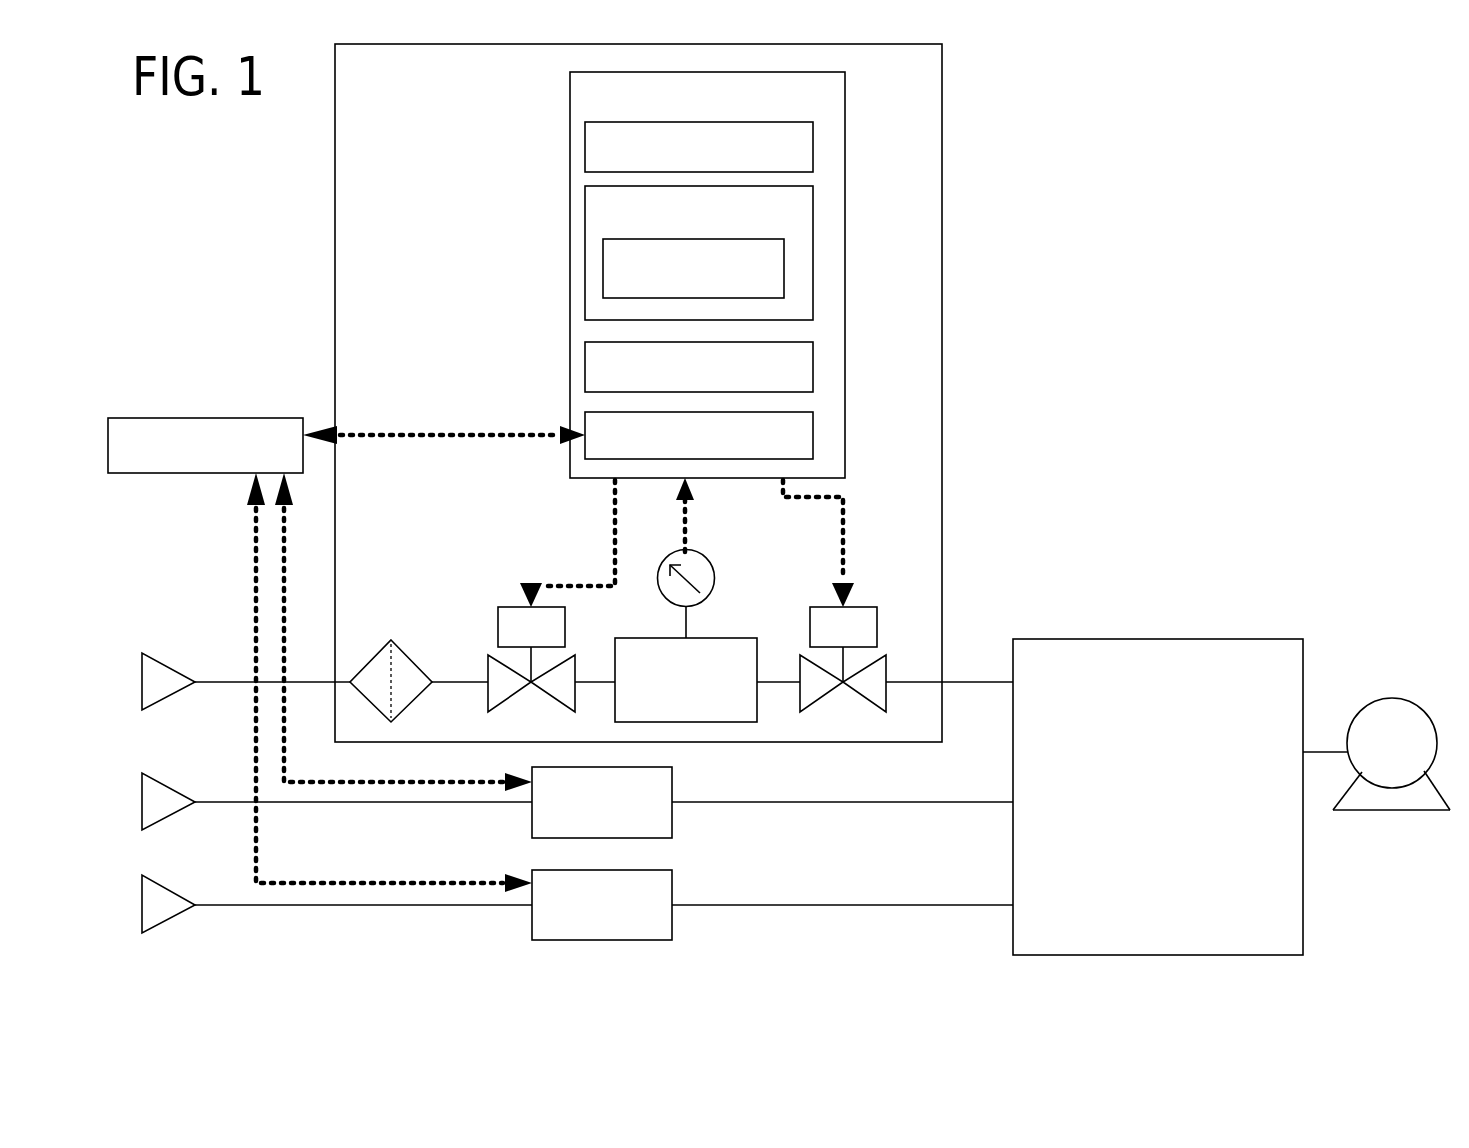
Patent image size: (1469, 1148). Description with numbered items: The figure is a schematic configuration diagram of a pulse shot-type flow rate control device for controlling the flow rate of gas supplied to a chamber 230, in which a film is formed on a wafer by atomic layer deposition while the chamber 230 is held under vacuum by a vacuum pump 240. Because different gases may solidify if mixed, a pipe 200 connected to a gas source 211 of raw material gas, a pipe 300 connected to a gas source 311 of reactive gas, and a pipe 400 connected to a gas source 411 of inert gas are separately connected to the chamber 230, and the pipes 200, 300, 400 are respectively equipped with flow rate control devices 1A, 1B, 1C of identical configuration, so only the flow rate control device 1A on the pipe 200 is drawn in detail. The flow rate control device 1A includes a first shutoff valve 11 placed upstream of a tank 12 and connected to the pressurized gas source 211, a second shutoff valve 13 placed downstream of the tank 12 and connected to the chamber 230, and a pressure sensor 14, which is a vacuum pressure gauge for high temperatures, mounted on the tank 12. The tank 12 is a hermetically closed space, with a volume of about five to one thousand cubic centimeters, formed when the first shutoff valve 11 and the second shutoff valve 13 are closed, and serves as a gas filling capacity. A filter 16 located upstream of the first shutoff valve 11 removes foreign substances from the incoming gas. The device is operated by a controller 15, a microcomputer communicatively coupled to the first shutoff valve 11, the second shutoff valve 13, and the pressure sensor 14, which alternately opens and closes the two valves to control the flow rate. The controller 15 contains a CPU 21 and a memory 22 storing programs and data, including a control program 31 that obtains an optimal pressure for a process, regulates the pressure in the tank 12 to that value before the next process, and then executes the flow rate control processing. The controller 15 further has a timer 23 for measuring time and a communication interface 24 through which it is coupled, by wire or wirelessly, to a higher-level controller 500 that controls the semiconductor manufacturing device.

The flow rate control device 1A is at (942, 82).
The controller 15 is at (845, 97).
The CPU 21 is at (813, 157).
The memory 22 is at (813, 210).
The control program 31 is at (784, 276).
The timer 23 is at (813, 376).
The communication interface 24 is at (813, 440).
The higher-level controller 500 is at (207, 418).
The first shutoff valve 11 is at (565, 607).
The tank 12 is at (745, 638).
The second shutoff valve 13 is at (877, 607).
The pressure sensor 14 is at (715, 575).
The filter 16 is at (407, 656).
The gas source 211 is at (180, 680).
The gas source 311 is at (180, 800).
The gas source 411 is at (180, 905).
The pipe 200 is at (975, 680).
The pipe 300 is at (922, 802).
The pipe 400 is at (928, 905).
The chamber 230 is at (1210, 639).
The vacuum pump 240 is at (1395, 698).
The flow rate control device 1B is at (602, 802).
The flow rate control device 1C is at (602, 905).